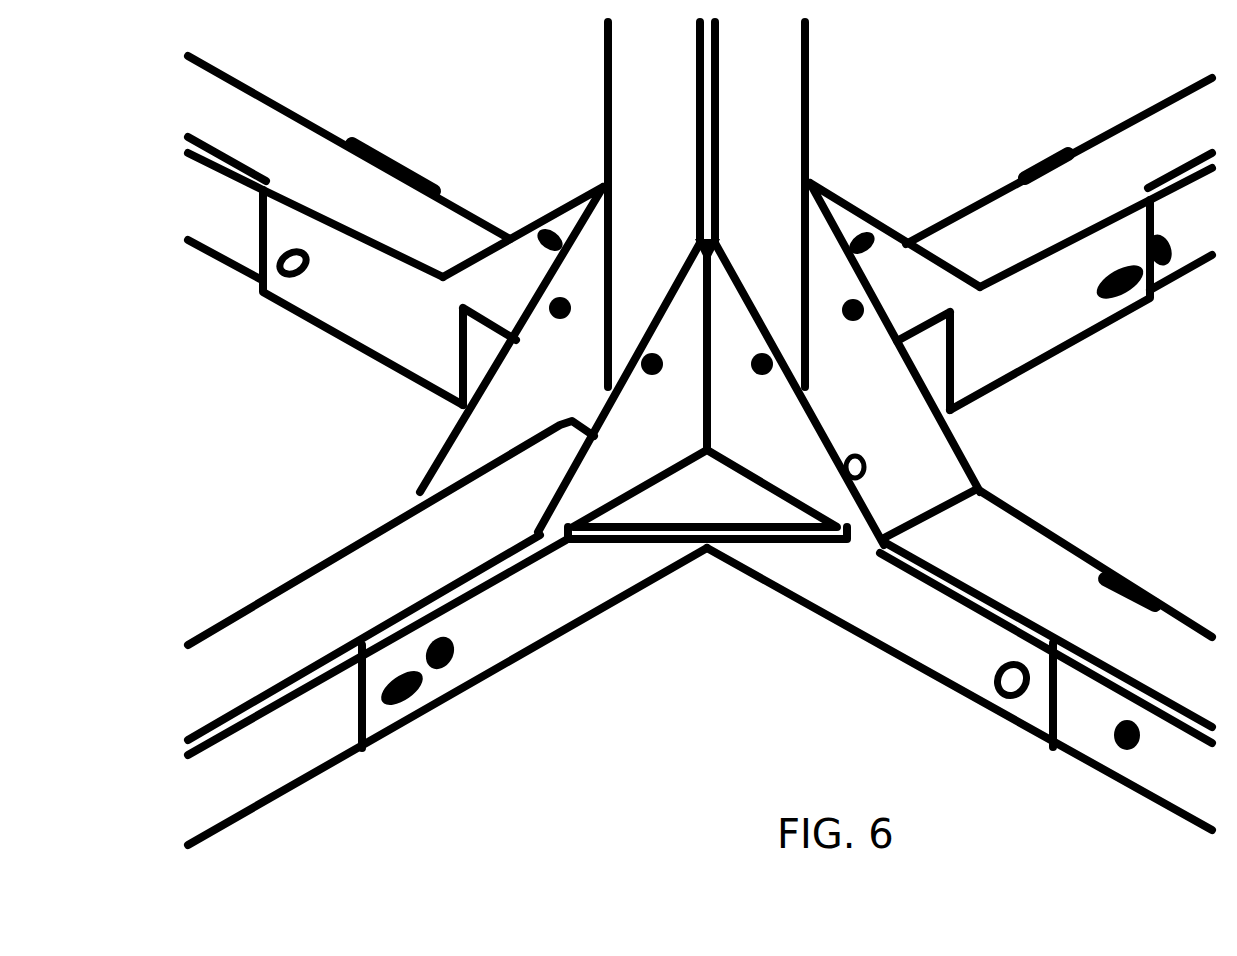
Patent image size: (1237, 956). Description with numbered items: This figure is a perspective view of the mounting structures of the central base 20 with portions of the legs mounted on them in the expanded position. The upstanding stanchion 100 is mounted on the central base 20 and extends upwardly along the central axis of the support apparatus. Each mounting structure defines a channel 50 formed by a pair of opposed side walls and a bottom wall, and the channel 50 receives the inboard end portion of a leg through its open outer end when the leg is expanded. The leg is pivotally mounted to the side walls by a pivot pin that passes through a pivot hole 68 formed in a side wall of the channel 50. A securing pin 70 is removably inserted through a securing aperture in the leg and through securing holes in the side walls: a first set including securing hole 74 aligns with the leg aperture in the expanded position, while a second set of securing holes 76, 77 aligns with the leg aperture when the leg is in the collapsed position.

The central base 20 is at (700, 433).
The channel 50 is at (757, 344).
The pivot hole 68 is at (866, 460).
The securing pin 70 is at (428, 708).
The securing hole 74 is at (1005, 700).
The securing hole 76 is at (762, 354).
The securing hole 77 is at (850, 309).
The stanchion 100 is at (642, 52).